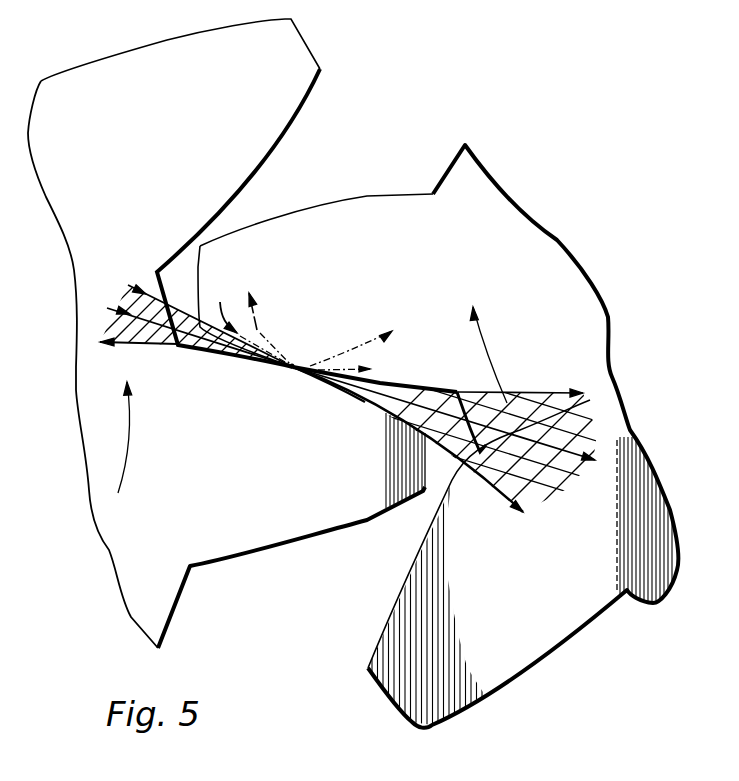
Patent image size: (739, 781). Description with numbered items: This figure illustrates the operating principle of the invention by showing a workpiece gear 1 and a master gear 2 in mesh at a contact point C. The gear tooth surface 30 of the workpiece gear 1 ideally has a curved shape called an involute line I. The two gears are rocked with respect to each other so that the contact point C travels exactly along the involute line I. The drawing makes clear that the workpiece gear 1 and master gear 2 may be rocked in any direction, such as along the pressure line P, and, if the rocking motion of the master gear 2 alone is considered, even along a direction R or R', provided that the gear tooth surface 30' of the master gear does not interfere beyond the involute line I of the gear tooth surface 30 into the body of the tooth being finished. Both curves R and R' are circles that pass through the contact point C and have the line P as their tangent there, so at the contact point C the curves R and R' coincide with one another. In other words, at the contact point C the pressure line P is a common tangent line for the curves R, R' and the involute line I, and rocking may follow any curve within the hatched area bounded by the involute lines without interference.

The workpiece gear 1 is at (170, 129).
The master gear 2 is at (416, 245).
The gear tooth surface 30 is at (329, 420).
The gear tooth surface 30' is at (375, 359).
The contact point C is at (290, 366).
The curve R is at (251, 322).
The curve R' is at (277, 324).
The pressure line P is at (537, 440).
The involute line I is at (504, 492).